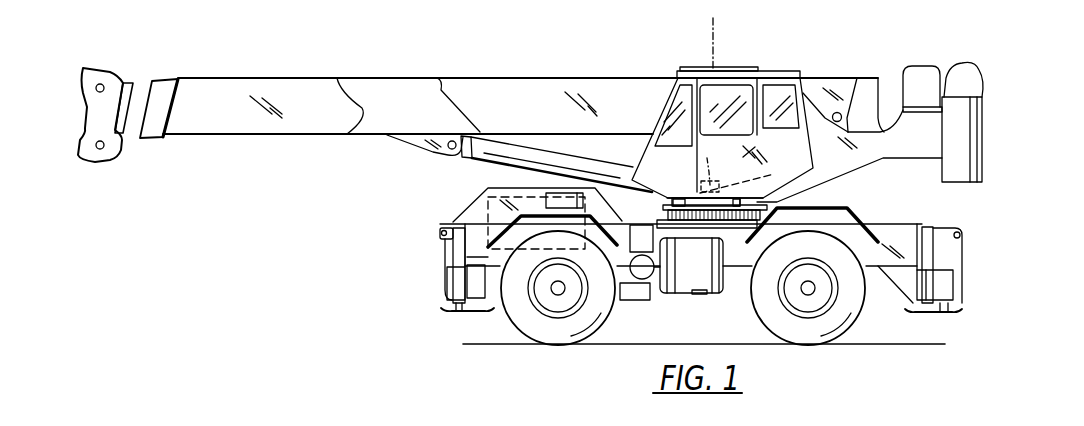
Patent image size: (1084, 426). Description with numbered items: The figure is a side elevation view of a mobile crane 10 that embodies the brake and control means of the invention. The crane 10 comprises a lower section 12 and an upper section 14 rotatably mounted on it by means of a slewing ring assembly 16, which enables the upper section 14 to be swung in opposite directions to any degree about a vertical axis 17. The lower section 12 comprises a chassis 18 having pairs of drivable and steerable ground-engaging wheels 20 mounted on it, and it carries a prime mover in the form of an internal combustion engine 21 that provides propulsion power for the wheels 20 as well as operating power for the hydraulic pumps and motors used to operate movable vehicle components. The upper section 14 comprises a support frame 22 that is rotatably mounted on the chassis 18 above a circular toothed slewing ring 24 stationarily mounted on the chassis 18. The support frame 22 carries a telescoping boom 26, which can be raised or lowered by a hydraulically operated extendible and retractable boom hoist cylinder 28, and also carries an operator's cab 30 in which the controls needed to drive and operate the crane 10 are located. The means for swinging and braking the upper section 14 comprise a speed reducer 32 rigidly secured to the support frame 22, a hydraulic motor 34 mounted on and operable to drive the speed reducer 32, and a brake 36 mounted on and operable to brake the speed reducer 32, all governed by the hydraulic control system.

The mobile crane 10 is at (634, 58).
The lower section 12 is at (930, 196).
The upper section 14 is at (781, 66).
The slewing ring assembly 16 is at (786, 197).
The vertical axis 17 is at (715, 29).
The chassis 18 is at (738, 273).
The ground-engaging wheels 20 is at (608, 316).
The internal combustion engine 21 is at (486, 200).
The support frame 22 is at (670, 200).
The slewing ring 24 is at (665, 210).
The telescoping boom 26 is at (520, 56).
The boom hoist cylinder 28 is at (465, 158).
The operator's cab 30 is at (633, 150).
The speed reducer 32 is at (748, 176).
The hydraulic motor 34 is at (715, 165).
The brake 36 is at (766, 149).